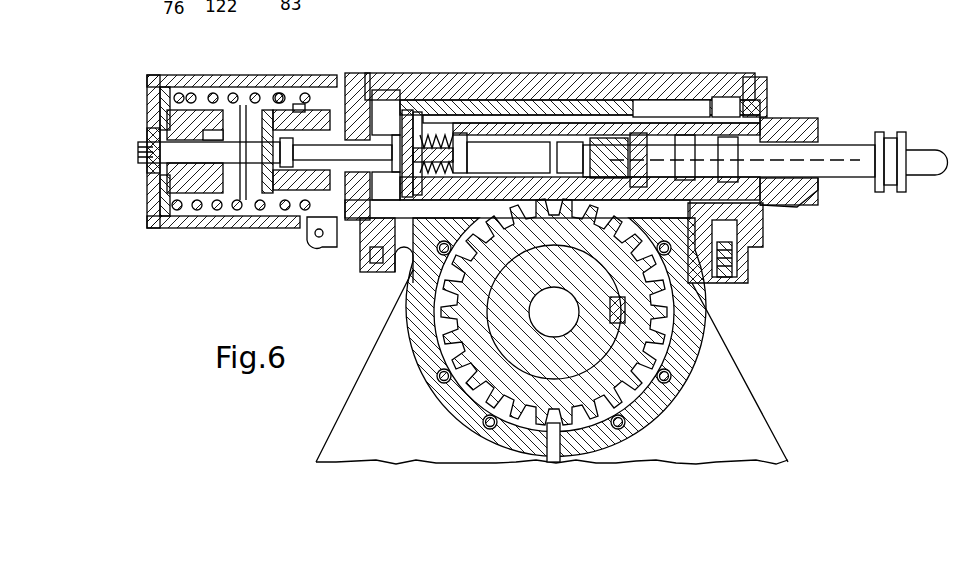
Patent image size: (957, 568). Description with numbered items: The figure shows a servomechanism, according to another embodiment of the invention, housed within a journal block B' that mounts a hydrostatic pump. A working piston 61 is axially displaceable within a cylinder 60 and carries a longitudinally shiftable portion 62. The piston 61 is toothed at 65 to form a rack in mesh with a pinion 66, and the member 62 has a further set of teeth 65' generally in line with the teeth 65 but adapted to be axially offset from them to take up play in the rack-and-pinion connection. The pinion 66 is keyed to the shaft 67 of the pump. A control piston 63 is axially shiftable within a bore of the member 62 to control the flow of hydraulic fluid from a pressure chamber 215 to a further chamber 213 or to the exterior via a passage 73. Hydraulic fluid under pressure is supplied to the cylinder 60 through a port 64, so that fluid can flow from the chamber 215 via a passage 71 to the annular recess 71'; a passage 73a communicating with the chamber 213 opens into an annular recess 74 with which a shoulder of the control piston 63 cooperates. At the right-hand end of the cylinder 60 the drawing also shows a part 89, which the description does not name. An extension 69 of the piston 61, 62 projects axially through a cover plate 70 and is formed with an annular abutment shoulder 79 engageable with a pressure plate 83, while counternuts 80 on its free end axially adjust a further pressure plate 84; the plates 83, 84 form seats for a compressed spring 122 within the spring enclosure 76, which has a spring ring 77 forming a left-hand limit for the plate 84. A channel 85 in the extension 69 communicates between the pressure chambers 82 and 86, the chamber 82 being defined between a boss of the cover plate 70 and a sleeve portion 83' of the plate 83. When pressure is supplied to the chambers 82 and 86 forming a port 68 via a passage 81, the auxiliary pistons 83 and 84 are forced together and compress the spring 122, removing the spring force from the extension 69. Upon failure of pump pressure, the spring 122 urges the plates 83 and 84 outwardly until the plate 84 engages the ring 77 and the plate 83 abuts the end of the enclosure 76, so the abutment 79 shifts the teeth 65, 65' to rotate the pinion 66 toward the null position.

The cylinder 60 is at (566, 80).
The working piston 61 is at (531, 105).
The longitudinally shiftable portion 62 is at (790, 118).
The control piston 63 is at (852, 176).
The port 64 is at (737, 262).
The teeth 65 is at (386, 276).
The teeth 65' is at (609, 104).
The pinion 66 is at (663, 348).
The shaft 67 is at (590, 352).
The port 68 is at (379, 4).
The extension 69 is at (383, 108).
The cover plate 70 is at (352, 78).
The passage 71 is at (671, 78).
The annular recess 71' is at (646, 101).
The passage 73 is at (802, 207).
The passage 73a is at (485, 125).
The annular recess 74 is at (708, 282).
The spring enclosure 76 is at (185, 228).
The spring ring 77 is at (148, 200).
The annular abutment shoulder 79 is at (278, 93).
The counternuts 80 is at (145, 167).
The passage 81 is at (340, 228).
The pressure chamber 82 is at (277, 188).
The pressure plate 83 is at (303, 116).
The sleeve portion 83' is at (306, 71).
The pressure plate 84 is at (170, 110).
The channel 85 is at (246, 188).
The pressure chamber 86 is at (208, 172).
The end cap 89 is at (767, 80).
The compressed spring 122 is at (237, 207).
The chamber 213 is at (392, 107).
The pressure chamber 215 is at (725, 100).
The journal block B' is at (403, 339).